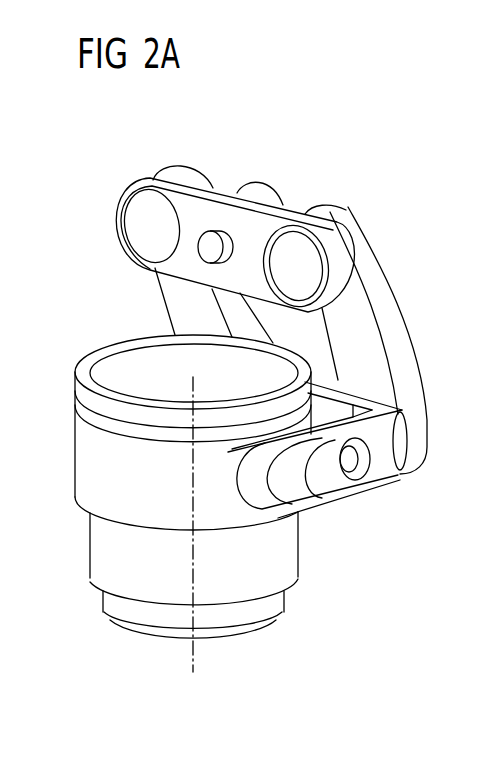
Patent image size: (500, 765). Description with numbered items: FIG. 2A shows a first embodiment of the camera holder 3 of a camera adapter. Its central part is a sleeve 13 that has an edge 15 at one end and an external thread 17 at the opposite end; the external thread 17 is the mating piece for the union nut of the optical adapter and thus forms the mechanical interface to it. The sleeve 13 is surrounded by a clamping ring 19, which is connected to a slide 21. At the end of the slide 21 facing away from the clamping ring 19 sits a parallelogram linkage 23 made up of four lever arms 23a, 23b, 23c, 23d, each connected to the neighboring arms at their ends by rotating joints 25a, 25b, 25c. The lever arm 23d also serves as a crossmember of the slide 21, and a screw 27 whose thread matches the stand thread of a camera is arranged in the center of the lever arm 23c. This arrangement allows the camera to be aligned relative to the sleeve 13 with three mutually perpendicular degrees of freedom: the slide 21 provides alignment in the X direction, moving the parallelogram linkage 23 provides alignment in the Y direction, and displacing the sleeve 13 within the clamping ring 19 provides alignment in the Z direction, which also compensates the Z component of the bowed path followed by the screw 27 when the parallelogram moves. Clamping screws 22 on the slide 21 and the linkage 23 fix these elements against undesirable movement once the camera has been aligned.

The lever assembly 3 is at (318, 160).
The sleeve 13 is at (318, 557).
The edge 15 is at (200, 397).
The external thread 17 is at (260, 623).
The clamping ring 19 is at (148, 510).
The slide 21 is at (370, 407).
The clamping screws 22 is at (355, 462).
The parallelogram linkage 23 is at (386, 230).
The lever arm 23a is at (390, 323).
The lever arm 23b is at (182, 302).
The lever arm 23c is at (193, 186).
The lever arm 23d is at (313, 375).
The rotating joint 25a is at (327, 215).
The rotating joint 25b is at (162, 181).
The rotating joint 25c is at (417, 435).
The screw 27 is at (257, 190).